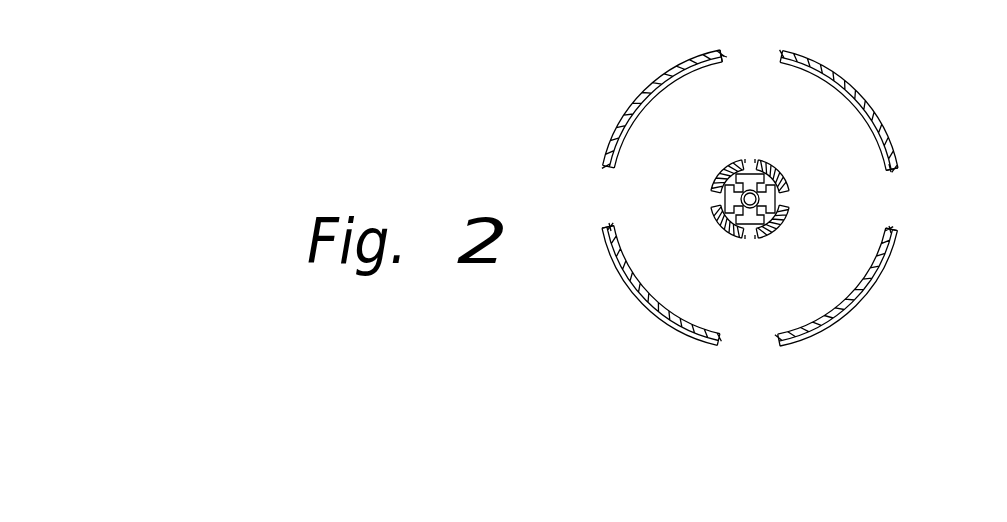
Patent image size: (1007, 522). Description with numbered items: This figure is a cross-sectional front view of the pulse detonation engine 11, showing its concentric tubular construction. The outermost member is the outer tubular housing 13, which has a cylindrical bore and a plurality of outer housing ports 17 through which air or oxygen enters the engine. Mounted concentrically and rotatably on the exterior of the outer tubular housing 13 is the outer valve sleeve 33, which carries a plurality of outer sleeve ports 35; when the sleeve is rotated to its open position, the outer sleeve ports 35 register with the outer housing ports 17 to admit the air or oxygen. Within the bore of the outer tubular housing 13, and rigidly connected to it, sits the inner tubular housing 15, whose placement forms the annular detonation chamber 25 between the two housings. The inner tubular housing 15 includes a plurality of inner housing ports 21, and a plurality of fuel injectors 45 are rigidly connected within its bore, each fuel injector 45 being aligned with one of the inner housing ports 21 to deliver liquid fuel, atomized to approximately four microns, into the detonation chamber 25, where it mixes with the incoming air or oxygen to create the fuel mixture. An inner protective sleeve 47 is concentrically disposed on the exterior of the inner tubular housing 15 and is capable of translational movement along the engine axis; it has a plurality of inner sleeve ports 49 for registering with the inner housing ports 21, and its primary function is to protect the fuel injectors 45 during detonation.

The pulse detonation engine 11 is at (659, 59).
The outer tubular housing 13 is at (647, 93).
The outer housing ports 17 is at (725, 59).
The outer valve sleeve 33 is at (806, 64).
The outer sleeve ports 35 is at (893, 165).
The inner tubular housing 15 is at (728, 228).
The fuel injectors 45 is at (738, 179).
The inner protective sleeve 47 is at (773, 176).
The inner housing ports 21 is at (751, 168).
The inner sleeve ports 49 is at (712, 200).
The annular detonation chamber 25 is at (852, 201).